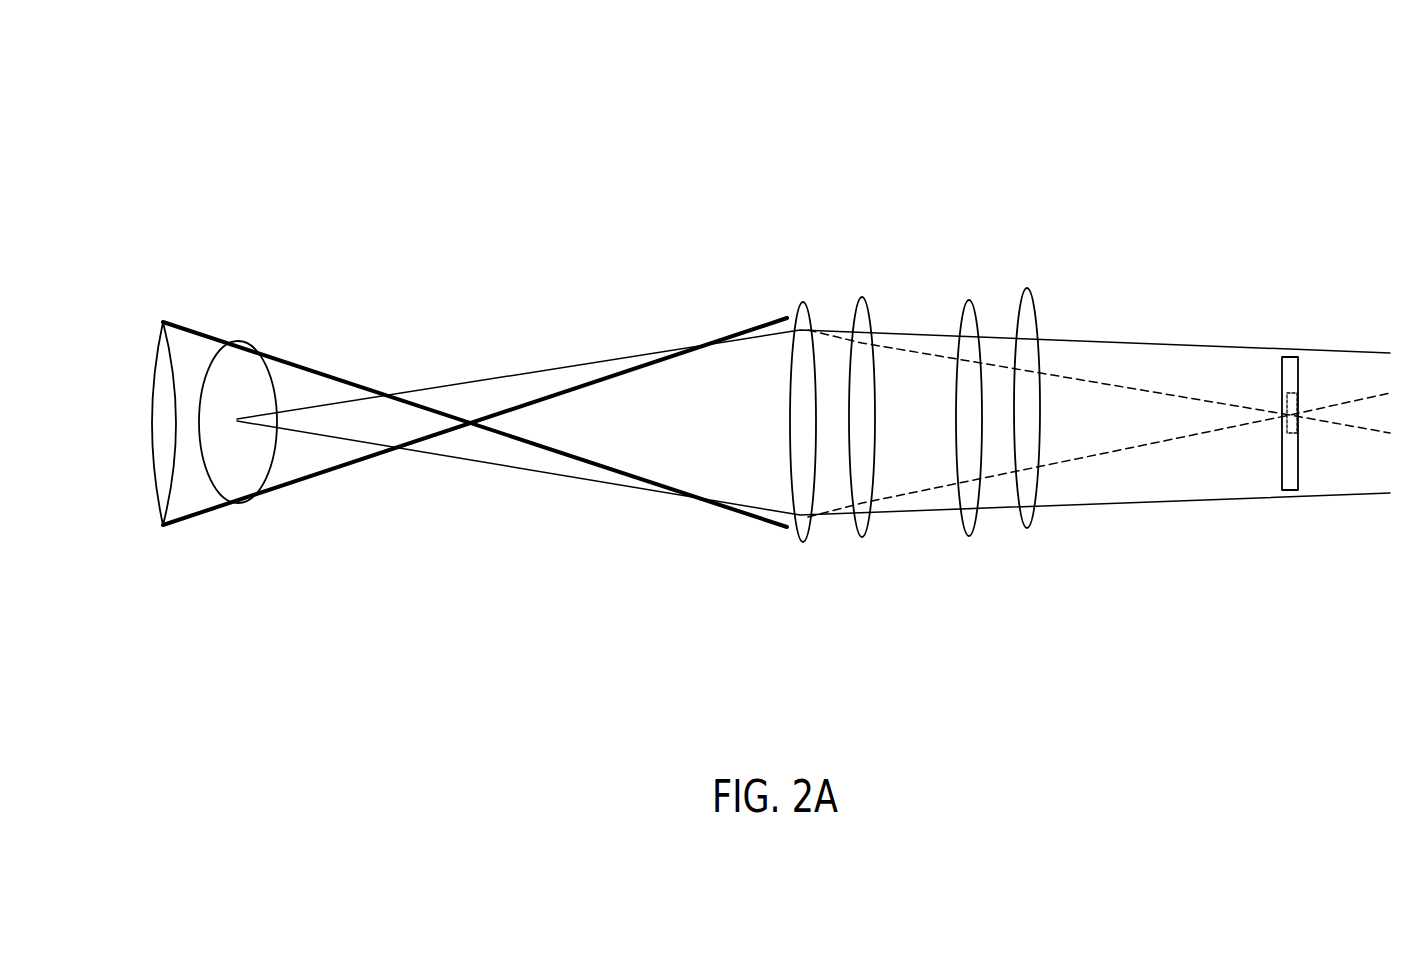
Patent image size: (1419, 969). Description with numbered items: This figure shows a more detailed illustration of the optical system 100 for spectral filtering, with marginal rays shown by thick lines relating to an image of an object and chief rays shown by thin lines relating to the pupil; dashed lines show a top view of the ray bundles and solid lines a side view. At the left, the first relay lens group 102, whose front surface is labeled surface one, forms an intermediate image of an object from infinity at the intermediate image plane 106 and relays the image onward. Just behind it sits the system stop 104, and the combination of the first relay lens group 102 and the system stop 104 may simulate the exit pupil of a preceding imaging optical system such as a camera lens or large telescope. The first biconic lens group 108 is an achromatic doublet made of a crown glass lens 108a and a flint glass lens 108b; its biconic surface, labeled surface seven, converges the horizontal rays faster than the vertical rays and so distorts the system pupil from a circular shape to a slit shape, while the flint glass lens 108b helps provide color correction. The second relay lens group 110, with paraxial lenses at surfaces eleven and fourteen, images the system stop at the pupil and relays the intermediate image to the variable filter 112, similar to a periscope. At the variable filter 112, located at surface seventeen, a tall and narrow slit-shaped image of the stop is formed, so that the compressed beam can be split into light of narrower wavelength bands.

The optical system 100 is at (1027, 80).
The first relay lens group 102 is at (157, 320).
The system stop 104 is at (243, 345).
The intermediate image plane 106 is at (470, 442).
The first biconic lens group 108 is at (777, 438).
The crown glass lens 108a is at (788, 392).
The flint glass lens 108b is at (862, 297).
The second relay lens group 110 is at (958, 308).
The variable filter 112 is at (1300, 357).